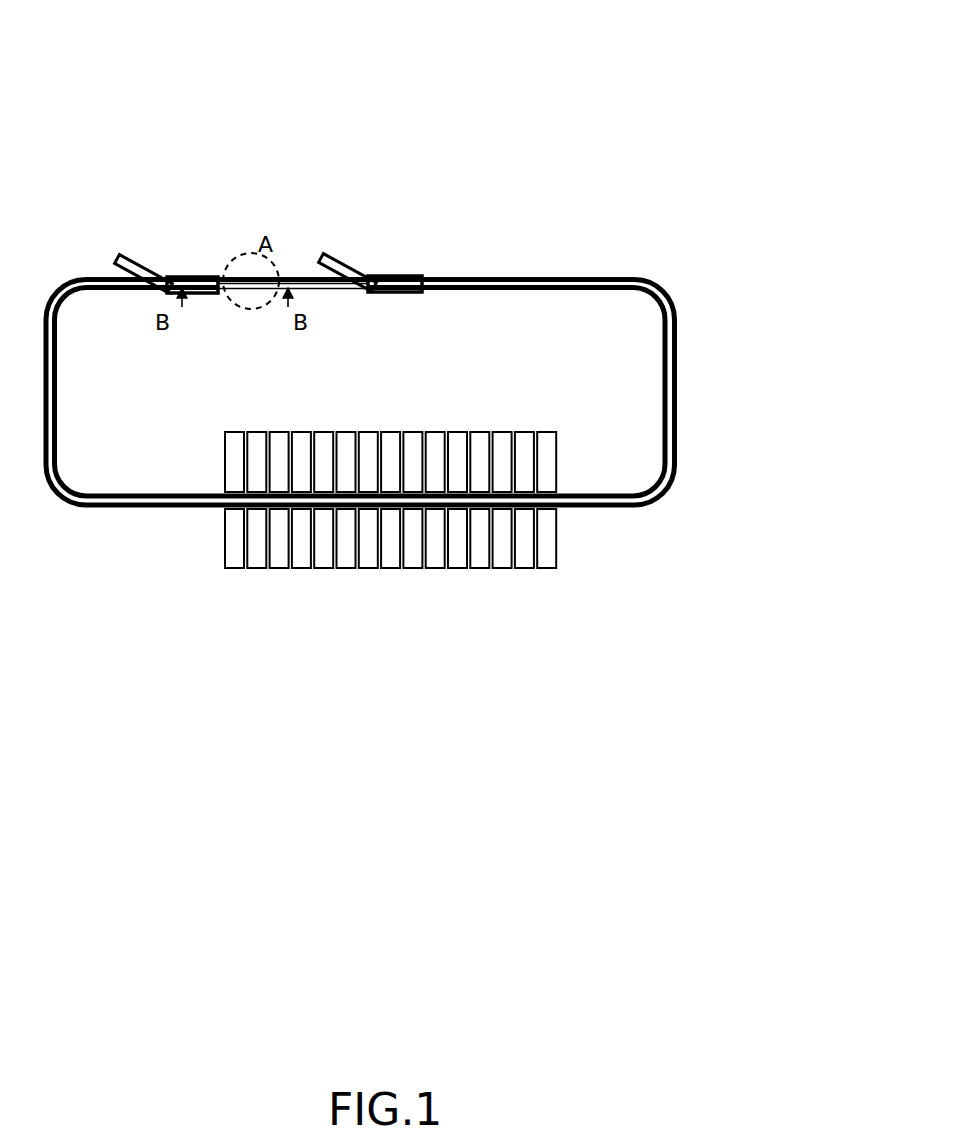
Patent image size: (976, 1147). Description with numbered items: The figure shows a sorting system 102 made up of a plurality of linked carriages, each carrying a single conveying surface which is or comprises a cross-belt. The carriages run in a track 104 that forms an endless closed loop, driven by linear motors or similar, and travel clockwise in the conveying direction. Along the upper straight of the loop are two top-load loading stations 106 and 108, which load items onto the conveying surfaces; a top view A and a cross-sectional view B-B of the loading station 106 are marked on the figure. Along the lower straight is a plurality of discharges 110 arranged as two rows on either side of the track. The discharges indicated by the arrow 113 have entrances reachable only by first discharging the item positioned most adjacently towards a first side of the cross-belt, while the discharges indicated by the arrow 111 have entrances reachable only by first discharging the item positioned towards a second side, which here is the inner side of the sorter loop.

The sorting system 102 is at (94, 50).
The track 104 is at (547, 277).
The top-load loading station 106 is at (178, 278).
The top-load loading station 108 is at (388, 275).
The discharges 110 is at (464, 536).
The arrow 111 is at (588, 468).
The arrow 113 is at (578, 564).